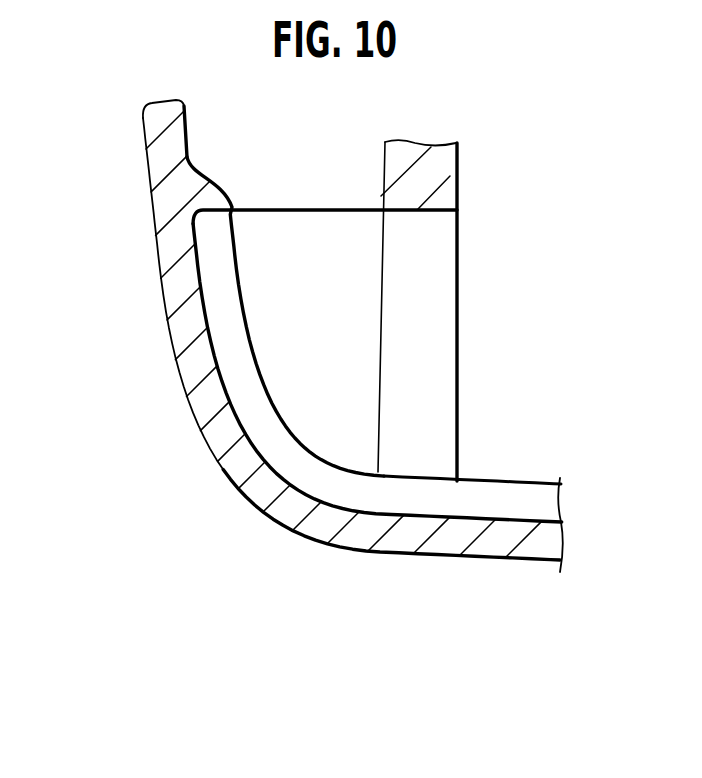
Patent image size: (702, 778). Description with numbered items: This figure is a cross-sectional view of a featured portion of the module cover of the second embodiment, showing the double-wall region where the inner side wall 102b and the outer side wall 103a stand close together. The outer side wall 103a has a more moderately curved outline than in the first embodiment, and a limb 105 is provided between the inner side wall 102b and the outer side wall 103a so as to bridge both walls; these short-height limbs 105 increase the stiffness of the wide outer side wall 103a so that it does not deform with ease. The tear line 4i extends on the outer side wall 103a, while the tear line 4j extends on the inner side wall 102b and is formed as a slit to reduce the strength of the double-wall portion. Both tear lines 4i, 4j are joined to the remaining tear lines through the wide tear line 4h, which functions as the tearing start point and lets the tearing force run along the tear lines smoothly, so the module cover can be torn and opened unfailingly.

The limb 105 is at (302, 242).
The inner side wall 102b is at (434, 178).
The tear line 4i is at (220, 302).
The outer side wall 103a is at (195, 365).
The tear line 4j is at (435, 363).
The wide tear line 4h is at (523, 495).